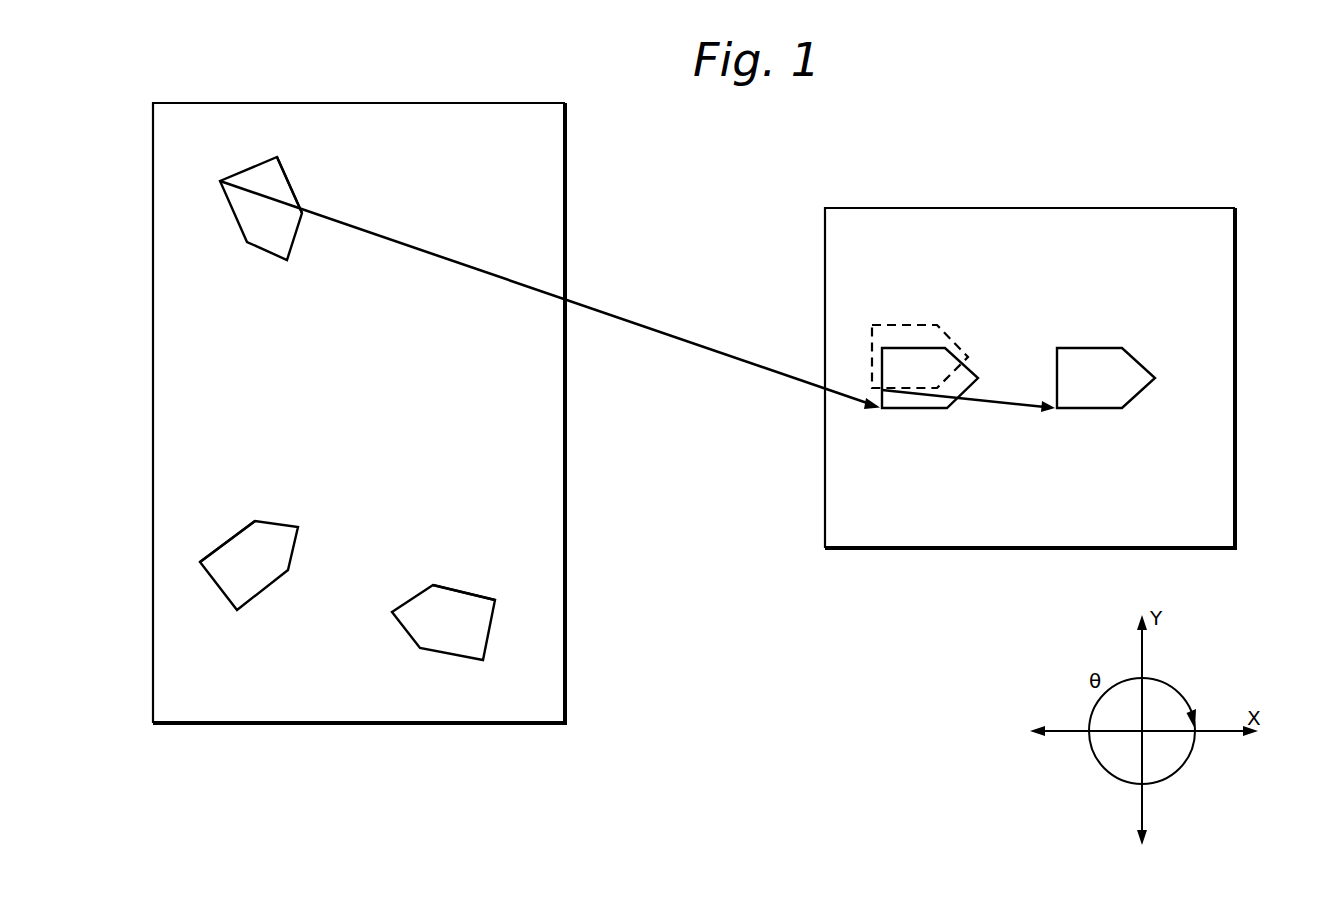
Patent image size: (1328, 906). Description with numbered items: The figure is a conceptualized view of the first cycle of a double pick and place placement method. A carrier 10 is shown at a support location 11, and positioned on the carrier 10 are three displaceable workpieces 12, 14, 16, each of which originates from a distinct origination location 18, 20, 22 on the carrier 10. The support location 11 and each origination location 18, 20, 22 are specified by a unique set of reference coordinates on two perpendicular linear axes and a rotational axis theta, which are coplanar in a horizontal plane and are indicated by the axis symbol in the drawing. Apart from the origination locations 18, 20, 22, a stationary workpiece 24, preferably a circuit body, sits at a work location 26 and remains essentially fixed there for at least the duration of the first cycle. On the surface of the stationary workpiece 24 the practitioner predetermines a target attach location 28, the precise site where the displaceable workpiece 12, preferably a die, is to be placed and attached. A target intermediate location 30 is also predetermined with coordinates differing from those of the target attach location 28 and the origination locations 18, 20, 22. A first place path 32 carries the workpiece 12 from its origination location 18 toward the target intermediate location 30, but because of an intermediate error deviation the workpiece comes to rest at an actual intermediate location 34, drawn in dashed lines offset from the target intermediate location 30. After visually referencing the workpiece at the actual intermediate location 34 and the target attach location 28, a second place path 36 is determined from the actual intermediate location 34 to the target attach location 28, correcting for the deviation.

The carrier 10 is at (500, 197).
The support location 11 is at (565, 203).
The displaceable workpiece 12 is at (285, 233).
The displaceable workpiece 14 is at (259, 581).
The displaceable workpiece 16 is at (471, 635).
The origination location 18 is at (287, 177).
The origination location 20 is at (227, 537).
The origination location 22 is at (452, 588).
The stationary workpiece 24 is at (1117, 484).
The work location 26 is at (1236, 242).
The target attach location 28 is at (1088, 348).
The target intermediate location 30 is at (908, 408).
The first place path 32 is at (643, 325).
The actual intermediate location 34 is at (903, 325).
The second place path 36 is at (988, 402).